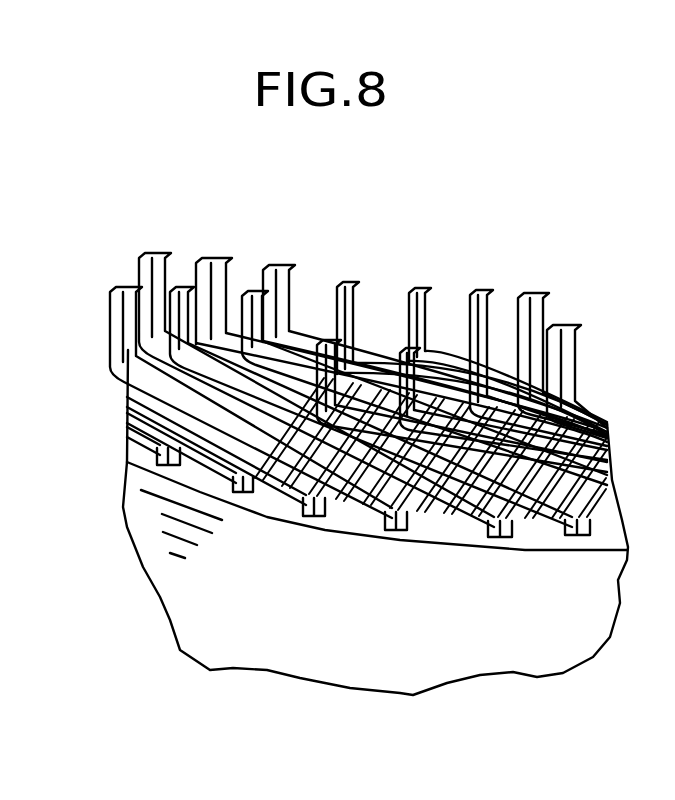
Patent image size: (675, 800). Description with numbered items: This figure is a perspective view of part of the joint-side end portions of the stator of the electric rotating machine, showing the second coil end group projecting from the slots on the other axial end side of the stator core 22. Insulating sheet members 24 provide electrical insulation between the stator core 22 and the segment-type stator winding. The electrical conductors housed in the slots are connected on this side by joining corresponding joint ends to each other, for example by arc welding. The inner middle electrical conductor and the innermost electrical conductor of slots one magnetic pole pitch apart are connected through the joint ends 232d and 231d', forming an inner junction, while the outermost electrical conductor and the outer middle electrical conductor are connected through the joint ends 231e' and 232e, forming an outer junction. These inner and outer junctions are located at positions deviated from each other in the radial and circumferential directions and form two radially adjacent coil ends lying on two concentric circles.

The stator core 22 is at (202, 483).
The insulating sheet member 24 is at (233, 512).
The joint end of innermost electrical conductor 231d' is at (379, 338).
The joint end of outermost electrical conductor 231e' is at (203, 384).
The joint end of inner middle electrical conductor 232d is at (142, 257).
The joint end of outer middle electrical conductor 232e is at (127, 270).